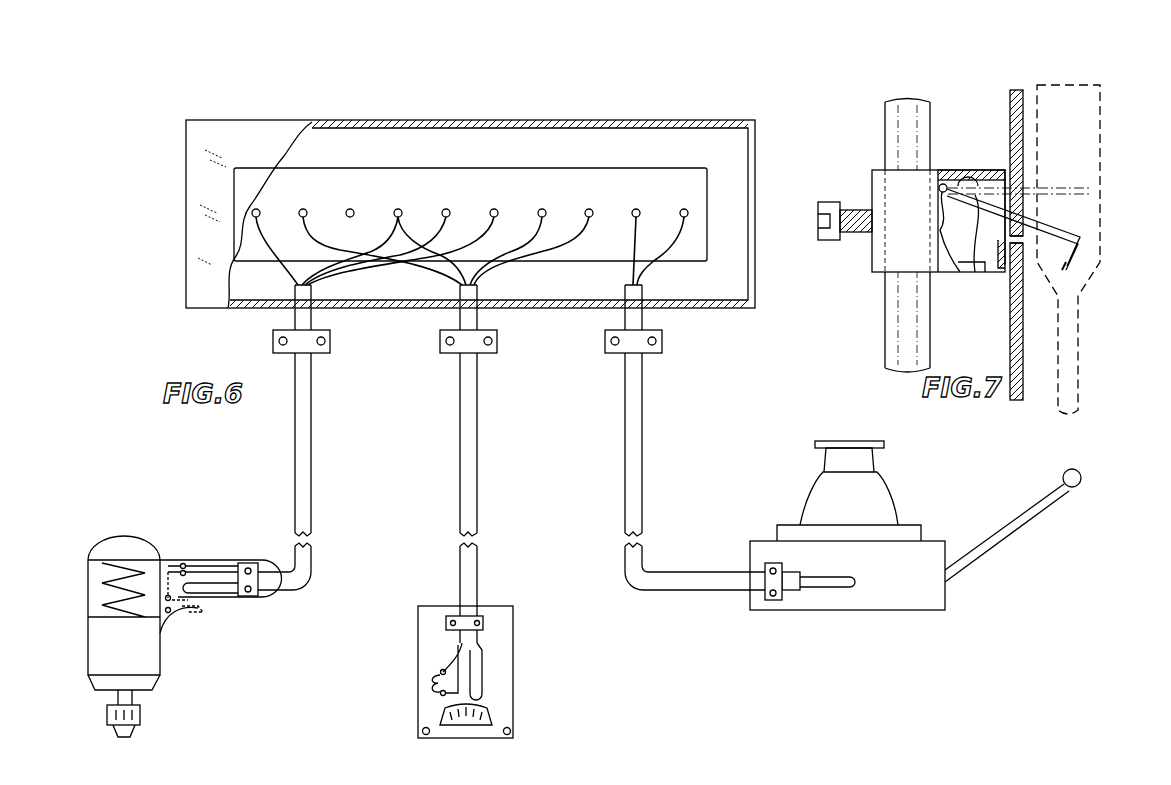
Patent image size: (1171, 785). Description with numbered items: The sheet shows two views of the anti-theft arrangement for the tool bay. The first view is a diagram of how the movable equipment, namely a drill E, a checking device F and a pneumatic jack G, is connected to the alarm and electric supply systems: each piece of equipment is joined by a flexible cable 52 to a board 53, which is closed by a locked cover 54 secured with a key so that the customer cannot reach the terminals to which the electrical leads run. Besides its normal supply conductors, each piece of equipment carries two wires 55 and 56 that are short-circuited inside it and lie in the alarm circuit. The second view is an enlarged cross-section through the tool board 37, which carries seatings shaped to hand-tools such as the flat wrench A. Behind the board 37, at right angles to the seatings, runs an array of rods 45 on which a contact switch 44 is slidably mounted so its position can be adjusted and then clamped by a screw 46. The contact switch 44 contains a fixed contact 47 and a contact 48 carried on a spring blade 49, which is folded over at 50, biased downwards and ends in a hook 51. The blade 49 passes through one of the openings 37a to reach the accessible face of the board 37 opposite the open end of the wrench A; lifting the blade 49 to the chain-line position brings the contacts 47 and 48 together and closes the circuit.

In FIG. 6, the flexible cables 52 is at (305, 428).
In FIG. 6, the board 53 is at (603, 186).
In FIG. 6, the housing 54 is at (240, 142).
In FIG. 6, the wire 55 is at (212, 592).
In FIG. 6, the wire 56 is at (236, 596).
In FIG. 6, the drill E is at (145, 653).
In FIG. 6, the checking device F is at (500, 655).
In FIG. 6, the pneumatic jack G is at (900, 592).
In FIG. 7, the board 37 is at (1012, 110).
In FIG. 7, the openings 37a is at (1022, 246).
In FIG. 7, the contact switch 44 is at (912, 190).
In FIG. 7, the rods 45 is at (915, 326).
In FIG. 7, the screw 46 is at (830, 212).
In FIG. 7, the fixed contact 47 is at (984, 172).
In FIG. 7, the contact 48 is at (984, 262).
In FIG. 7, the spring blade 49 is at (1070, 190).
In FIG. 7, the fold 50 is at (946, 184).
In FIG. 7, the hook 51 is at (1102, 222).
In FIG. 7, the flat wrench A is at (1082, 150).